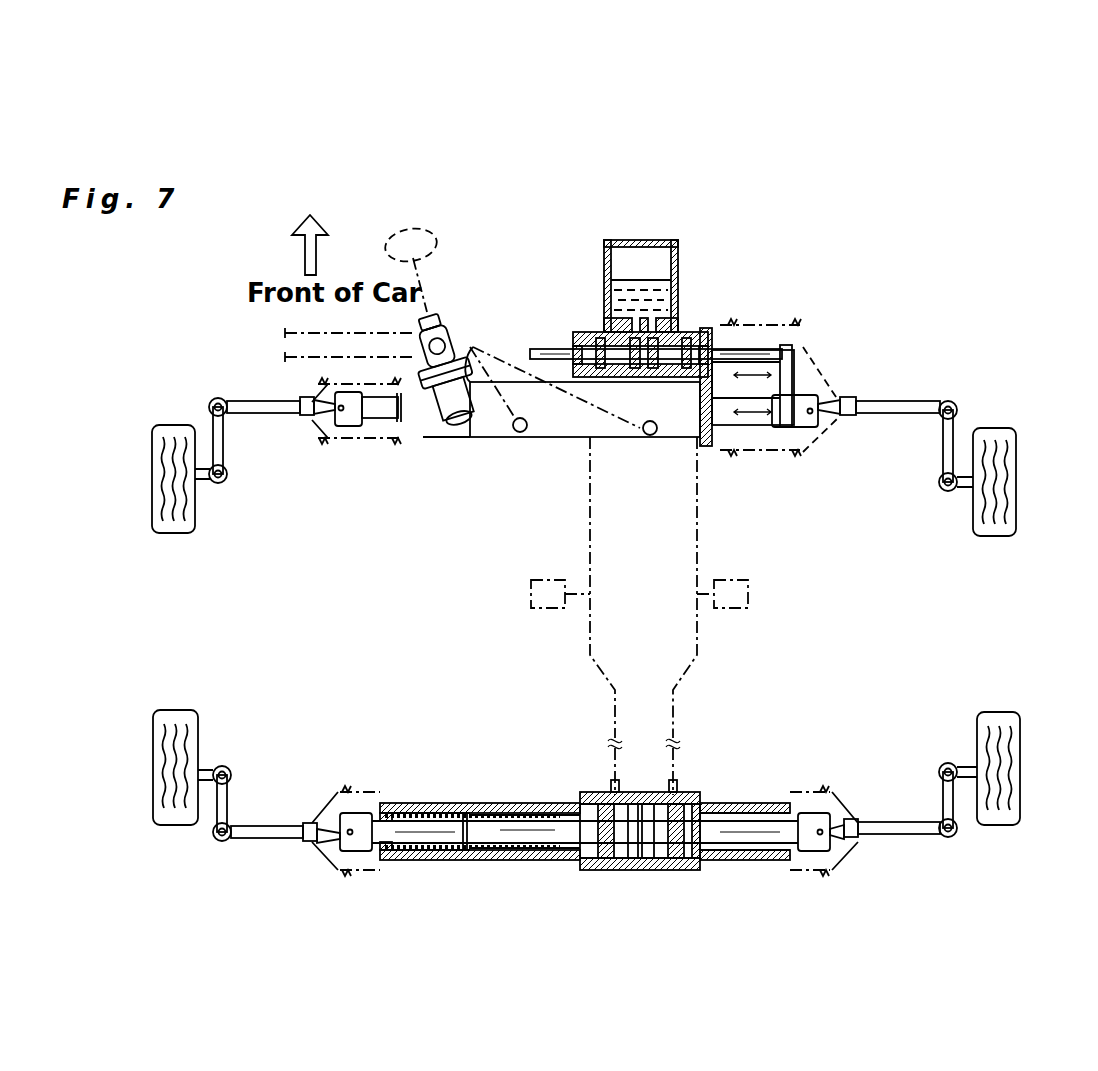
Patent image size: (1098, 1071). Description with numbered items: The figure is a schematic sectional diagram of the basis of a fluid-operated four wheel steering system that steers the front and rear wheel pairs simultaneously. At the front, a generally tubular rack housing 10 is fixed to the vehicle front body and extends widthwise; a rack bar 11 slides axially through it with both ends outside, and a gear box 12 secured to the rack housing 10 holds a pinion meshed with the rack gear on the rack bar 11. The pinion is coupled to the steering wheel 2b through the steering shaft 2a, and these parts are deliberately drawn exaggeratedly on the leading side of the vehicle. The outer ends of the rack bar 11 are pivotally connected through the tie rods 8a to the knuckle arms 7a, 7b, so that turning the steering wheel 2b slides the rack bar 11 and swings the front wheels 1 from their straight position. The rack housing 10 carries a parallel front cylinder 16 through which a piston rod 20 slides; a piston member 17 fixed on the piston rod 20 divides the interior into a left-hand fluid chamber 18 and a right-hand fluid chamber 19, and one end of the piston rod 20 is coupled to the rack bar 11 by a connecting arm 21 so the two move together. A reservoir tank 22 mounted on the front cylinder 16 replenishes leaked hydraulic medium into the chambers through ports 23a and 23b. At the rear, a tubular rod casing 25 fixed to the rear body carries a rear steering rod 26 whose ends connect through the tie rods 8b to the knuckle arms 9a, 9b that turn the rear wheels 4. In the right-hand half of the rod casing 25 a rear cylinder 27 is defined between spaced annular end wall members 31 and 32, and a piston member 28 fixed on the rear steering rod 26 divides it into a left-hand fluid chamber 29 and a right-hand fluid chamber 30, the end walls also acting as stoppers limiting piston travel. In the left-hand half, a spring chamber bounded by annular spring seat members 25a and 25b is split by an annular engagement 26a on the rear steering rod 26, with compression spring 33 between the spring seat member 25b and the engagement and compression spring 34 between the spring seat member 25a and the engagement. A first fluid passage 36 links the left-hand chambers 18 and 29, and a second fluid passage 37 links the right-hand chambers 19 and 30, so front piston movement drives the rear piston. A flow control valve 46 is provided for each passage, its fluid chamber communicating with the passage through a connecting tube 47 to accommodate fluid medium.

The front wheels 1 is at (154, 471).
The steering shaft 2a is at (420, 286).
The steering wheel 2b is at (405, 232).
The rear wheel 4 is at (158, 772).
The front knuckle arm 7a is at (204, 482).
The knuckle arms 7b is at (226, 445).
The tie rods 8a is at (250, 400).
The tie rods 8b is at (268, 842).
The rear knuckle arm 9a is at (206, 772).
The knuckle arms 9b is at (226, 805).
The rack housing 10 is at (556, 437).
The rack bar 11 is at (370, 428).
The gear box 12 is at (447, 400).
The front cylinder 16 is at (693, 332).
The piston member 17 is at (633, 350).
The left-hand fluid chamber 18 is at (651, 355).
The right-hand fluid chamber 19 is at (704, 332).
The piston rod 20 is at (754, 352).
The connecting arm 21 is at (786, 388).
The reservoir tank 22 is at (672, 240).
The port 23a is at (600, 340).
The port 23b is at (688, 338).
The rod casing 25 is at (520, 803).
The spring seat member 25a is at (548, 857).
The spring seat member 25b is at (400, 805).
The rear steering rod 26 is at (562, 822).
The annular engagement 26a is at (463, 813).
The rear cylinder 27 is at (700, 800).
The piston member 28 is at (646, 868).
The left-hand fluid chamber 29 is at (622, 868).
The right-hand fluid chamber 30 is at (675, 868).
The end wall member 31 is at (588, 866).
The end wall member 32 is at (690, 870).
The compression spring 33 is at (415, 860).
The compression spring 34 is at (490, 860).
The first fluid passage 36 is at (590, 553).
The second fluid passage 37 is at (697, 553).
The flow control valve 46 is at (531, 598).
The connecting tube 47 is at (562, 608).